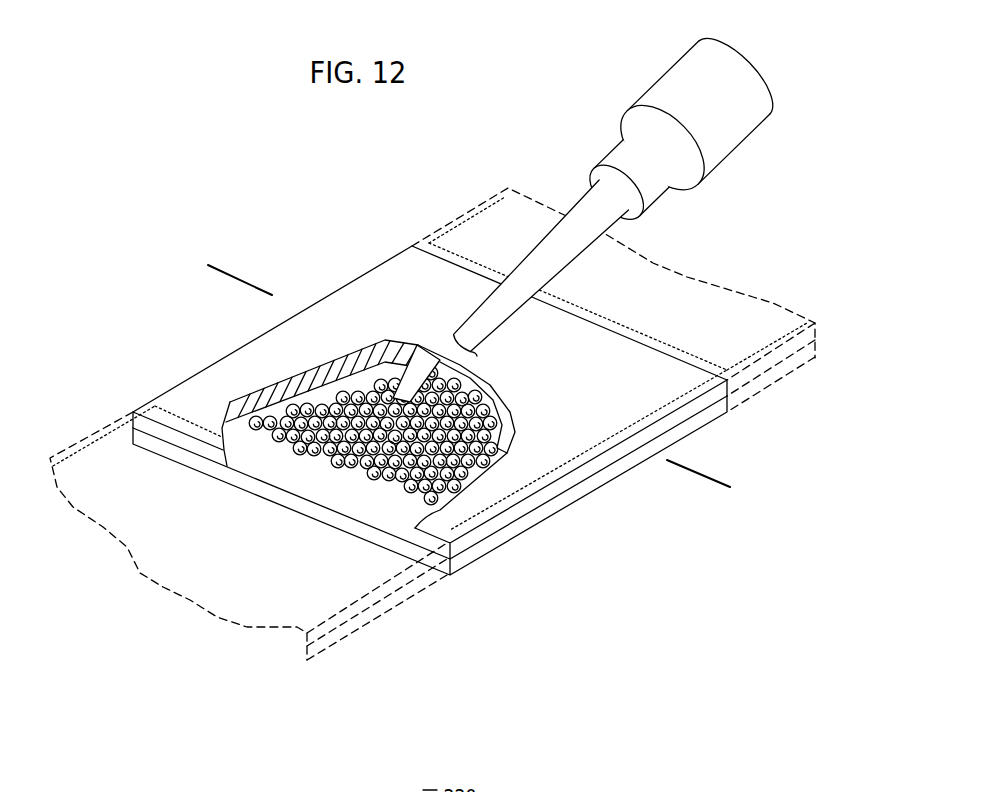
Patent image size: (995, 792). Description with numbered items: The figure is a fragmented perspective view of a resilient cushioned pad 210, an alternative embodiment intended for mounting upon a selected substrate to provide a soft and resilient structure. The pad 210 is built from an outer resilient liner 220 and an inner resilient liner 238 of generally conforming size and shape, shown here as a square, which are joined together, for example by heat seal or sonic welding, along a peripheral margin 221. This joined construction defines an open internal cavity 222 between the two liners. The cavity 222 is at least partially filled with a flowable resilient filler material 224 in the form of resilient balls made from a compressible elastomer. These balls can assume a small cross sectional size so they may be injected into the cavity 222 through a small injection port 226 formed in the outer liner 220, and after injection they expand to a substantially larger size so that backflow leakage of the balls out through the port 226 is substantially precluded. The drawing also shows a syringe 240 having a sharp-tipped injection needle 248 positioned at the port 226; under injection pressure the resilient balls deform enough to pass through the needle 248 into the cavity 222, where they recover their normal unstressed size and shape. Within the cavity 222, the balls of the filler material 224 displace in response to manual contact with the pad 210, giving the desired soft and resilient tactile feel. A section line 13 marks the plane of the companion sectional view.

The section line 13- 13 is at (685, 485).
The resilient cushioned pad 210 is at (430, 397).
The outer resilient liner 220 is at (545, 402).
The peripheral margin 221 is at (333, 297).
The internal cavity 222 is at (350, 504).
The resilient filler material 224 is at (378, 437).
The injection port 226 is at (448, 340).
The inner resilient liner 238 is at (453, 575).
The syringe 240 is at (639, 85).
The injection needle 248 is at (540, 262).